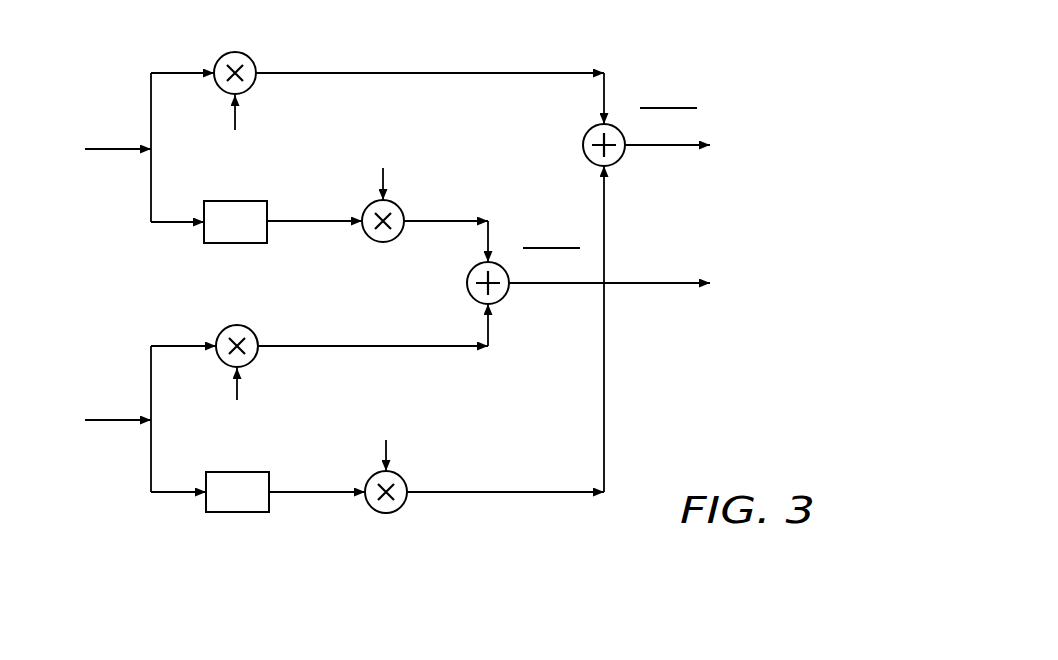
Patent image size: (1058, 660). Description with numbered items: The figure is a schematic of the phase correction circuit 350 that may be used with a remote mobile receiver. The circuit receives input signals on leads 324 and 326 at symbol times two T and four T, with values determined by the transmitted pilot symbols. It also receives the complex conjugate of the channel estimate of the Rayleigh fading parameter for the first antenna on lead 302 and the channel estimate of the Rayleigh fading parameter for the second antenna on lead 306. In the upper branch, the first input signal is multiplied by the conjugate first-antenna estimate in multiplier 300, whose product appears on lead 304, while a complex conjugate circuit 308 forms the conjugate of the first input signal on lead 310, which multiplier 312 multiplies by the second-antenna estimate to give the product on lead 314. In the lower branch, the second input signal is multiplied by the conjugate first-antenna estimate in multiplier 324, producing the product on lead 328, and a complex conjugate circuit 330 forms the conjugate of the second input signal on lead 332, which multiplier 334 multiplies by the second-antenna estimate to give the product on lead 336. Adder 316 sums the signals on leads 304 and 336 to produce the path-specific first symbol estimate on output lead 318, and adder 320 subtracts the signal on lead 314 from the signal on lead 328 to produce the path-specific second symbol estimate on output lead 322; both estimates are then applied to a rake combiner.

The multiplier 300 is at (216, 62).
The lead 302 is at (238, 118).
The lead 304 is at (497, 73).
The lead 306 is at (381, 173).
The complex conjugate circuit 308 is at (235, 244).
The lead 310 is at (320, 223).
The multiplier 312 is at (378, 243).
The lead 314 is at (447, 221).
The adder 316 is at (583, 144).
The output lead 318 is at (650, 147).
The adder 320 is at (506, 298).
The output lead 322 is at (648, 285).
The lead 324 is at (105, 150).
The lead 326 is at (105, 422).
The lead 328 is at (448, 348).
The complex conjugate circuit 330 is at (237, 513).
The lead 332 is at (322, 494).
The multiplier 334 is at (382, 514).
The lead 336 is at (500, 492).
The phase correction circuit 350 is at (676, 404).